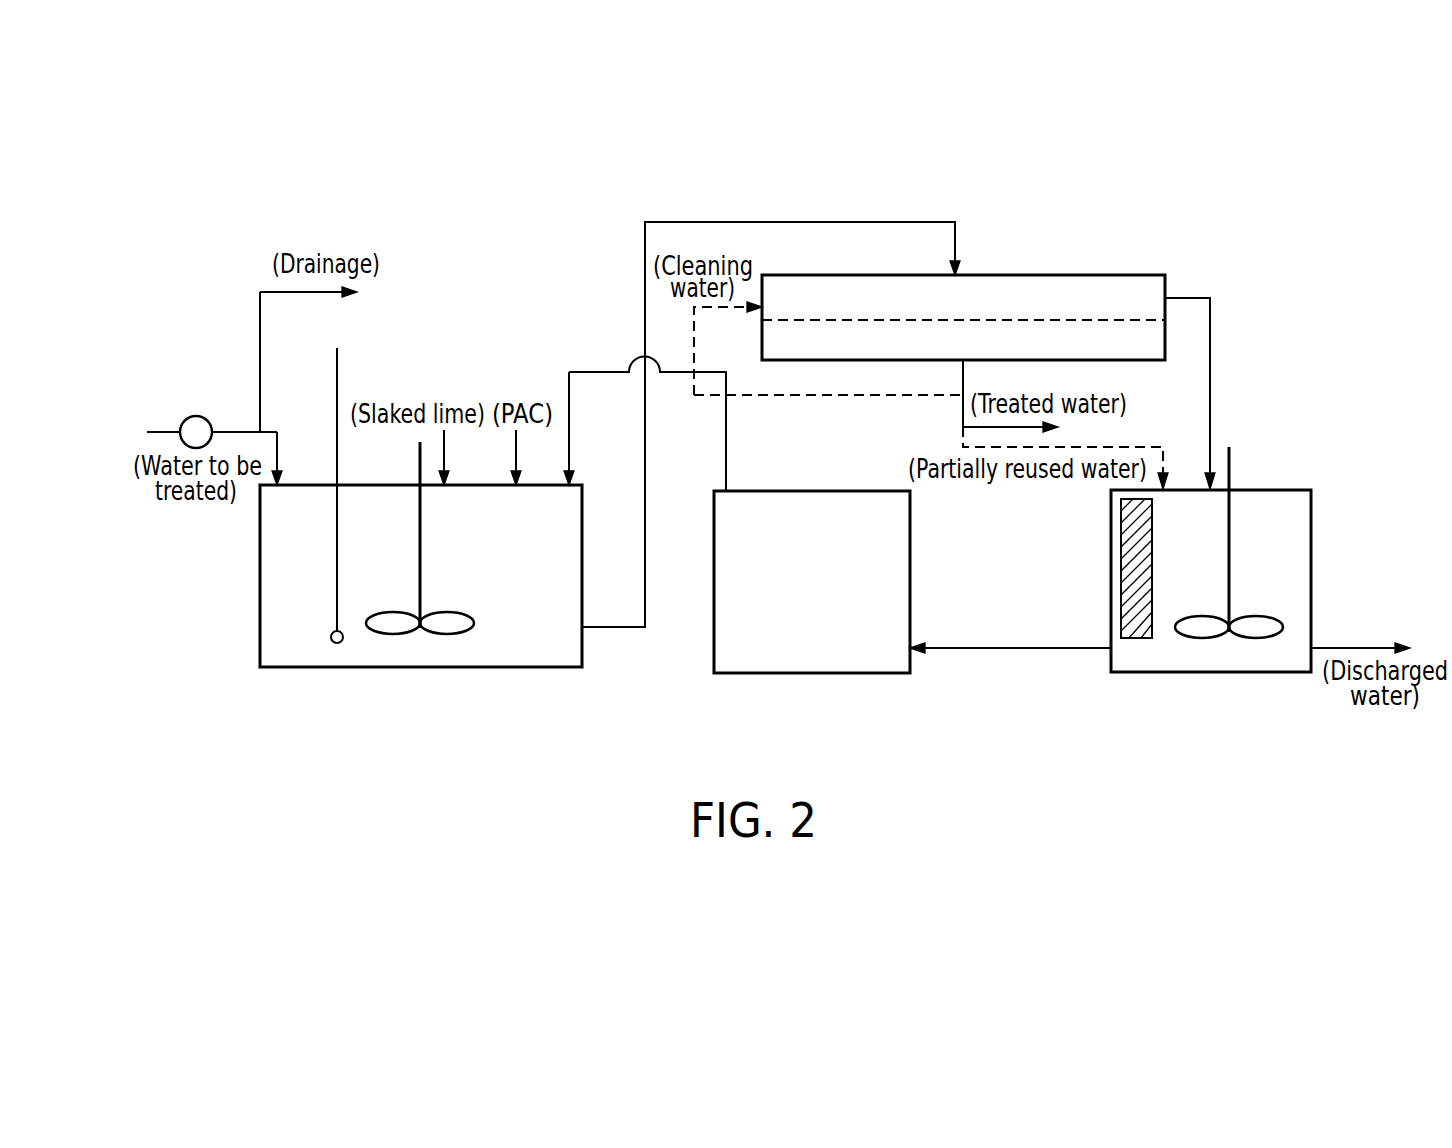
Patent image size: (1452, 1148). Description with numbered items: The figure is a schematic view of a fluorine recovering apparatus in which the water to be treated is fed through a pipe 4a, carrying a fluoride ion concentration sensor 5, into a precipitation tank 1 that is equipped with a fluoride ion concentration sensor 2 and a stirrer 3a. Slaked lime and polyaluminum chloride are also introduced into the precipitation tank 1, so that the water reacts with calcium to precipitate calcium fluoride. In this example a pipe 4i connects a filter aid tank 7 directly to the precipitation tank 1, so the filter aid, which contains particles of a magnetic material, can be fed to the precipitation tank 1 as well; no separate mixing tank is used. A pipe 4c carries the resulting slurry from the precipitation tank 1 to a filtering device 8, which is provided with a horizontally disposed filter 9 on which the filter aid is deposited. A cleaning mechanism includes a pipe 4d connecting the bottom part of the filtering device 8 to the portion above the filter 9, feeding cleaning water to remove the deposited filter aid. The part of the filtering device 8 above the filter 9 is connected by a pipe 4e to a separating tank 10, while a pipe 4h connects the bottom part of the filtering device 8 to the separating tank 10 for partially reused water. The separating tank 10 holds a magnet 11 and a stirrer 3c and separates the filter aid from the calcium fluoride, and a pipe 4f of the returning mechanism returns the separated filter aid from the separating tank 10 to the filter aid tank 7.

The precipitation tank 1 is at (418, 667).
The fluoride ion concentration sensor 2 is at (340, 380).
The stirrer 3a is at (422, 546).
The stirrer 3c is at (1231, 558).
The pipe 4a is at (162, 430).
The pipe 4c is at (710, 222).
The pipe 4d is at (830, 398).
The pipe 4e is at (1212, 358).
The pipe 4f is at (1010, 652).
The pipe 4h is at (1158, 447).
The pipe 4i is at (578, 370).
The fluoride ion concentration sensor 5 is at (197, 415).
The filter aid tank 7 is at (795, 673).
The filtering device 8 is at (1000, 275).
The filter 9 is at (1093, 320).
The separating tank 10 is at (1215, 672).
The magnet 11 is at (1152, 540).